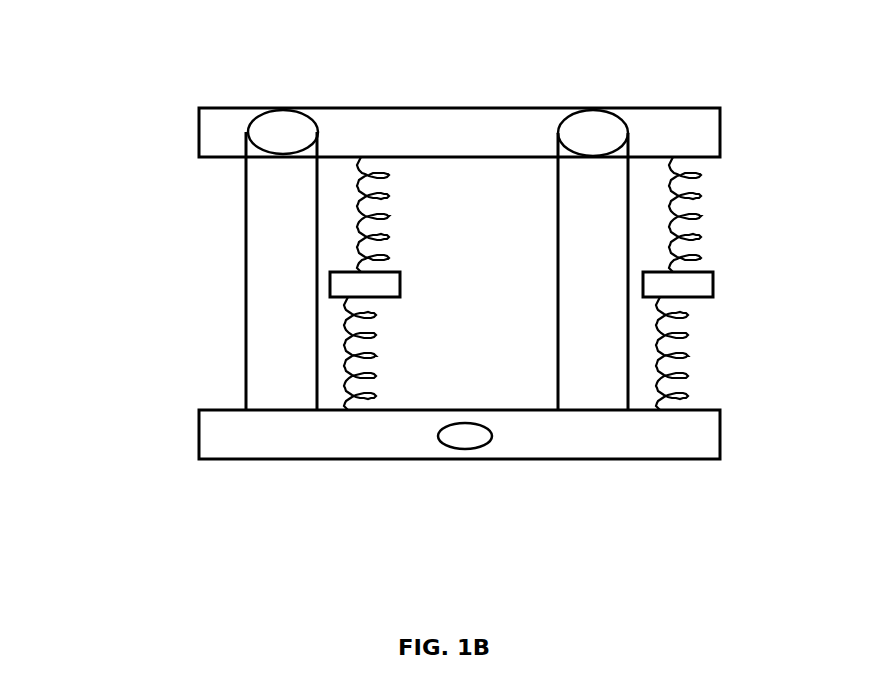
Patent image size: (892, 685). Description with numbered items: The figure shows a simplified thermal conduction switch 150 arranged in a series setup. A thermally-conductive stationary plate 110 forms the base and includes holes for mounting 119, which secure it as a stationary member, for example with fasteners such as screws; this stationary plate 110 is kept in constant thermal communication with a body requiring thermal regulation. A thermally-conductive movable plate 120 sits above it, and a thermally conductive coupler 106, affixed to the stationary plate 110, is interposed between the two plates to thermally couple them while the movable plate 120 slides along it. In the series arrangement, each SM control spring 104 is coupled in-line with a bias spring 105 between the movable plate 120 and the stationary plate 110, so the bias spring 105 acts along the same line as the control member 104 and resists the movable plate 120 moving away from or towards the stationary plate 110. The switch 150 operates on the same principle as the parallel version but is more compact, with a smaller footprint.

The thermal conduction switch 150 is at (145, 92).
The movable plate 120 is at (425, 128).
The stationary plate 110 is at (718, 435).
The holes for mounting 119 is at (465, 433).
The thermally conductive coupler 106 is at (270, 296).
The SM control spring 104 is at (395, 216).
The bias spring 105 is at (372, 355).